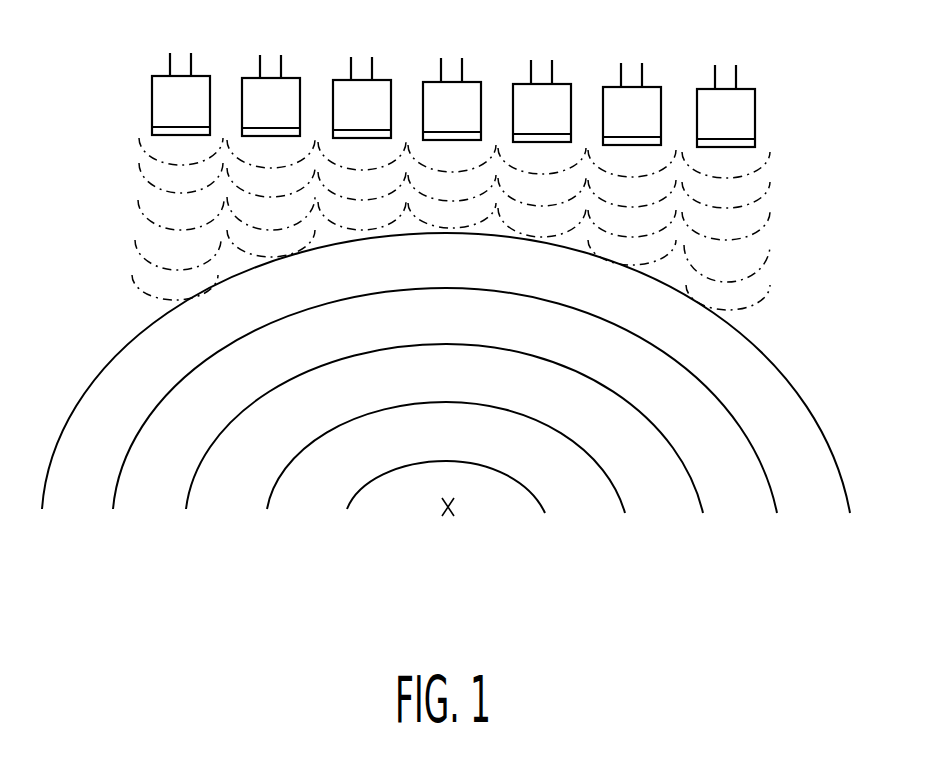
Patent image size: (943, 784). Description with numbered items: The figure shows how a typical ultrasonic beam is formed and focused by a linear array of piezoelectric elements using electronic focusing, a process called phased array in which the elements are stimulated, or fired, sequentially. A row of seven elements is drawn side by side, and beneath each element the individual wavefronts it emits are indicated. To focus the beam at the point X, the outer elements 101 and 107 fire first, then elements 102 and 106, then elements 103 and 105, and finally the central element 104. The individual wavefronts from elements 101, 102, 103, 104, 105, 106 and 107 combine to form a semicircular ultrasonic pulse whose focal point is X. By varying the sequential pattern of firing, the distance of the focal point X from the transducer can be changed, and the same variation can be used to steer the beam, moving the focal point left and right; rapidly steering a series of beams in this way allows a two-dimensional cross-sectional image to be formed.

The outer element 101 is at (158, 100).
The element 102 is at (250, 82).
The element 103 is at (379, 88).
The element 104 is at (471, 88).
The element 105 is at (560, 91).
The element 106 is at (647, 93).
The outer element 107 is at (748, 108).